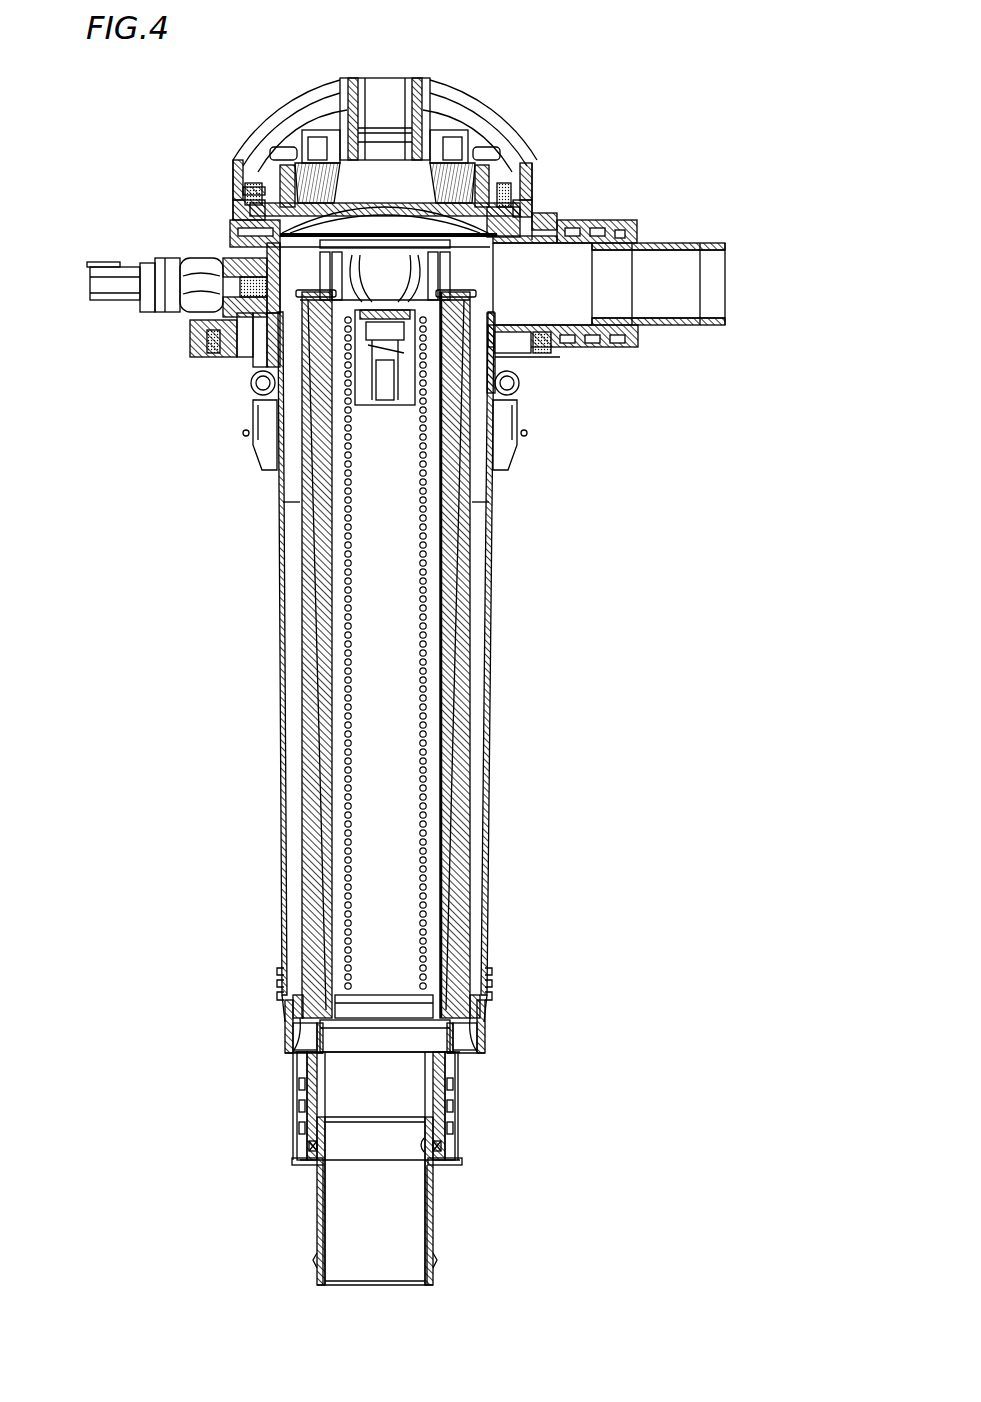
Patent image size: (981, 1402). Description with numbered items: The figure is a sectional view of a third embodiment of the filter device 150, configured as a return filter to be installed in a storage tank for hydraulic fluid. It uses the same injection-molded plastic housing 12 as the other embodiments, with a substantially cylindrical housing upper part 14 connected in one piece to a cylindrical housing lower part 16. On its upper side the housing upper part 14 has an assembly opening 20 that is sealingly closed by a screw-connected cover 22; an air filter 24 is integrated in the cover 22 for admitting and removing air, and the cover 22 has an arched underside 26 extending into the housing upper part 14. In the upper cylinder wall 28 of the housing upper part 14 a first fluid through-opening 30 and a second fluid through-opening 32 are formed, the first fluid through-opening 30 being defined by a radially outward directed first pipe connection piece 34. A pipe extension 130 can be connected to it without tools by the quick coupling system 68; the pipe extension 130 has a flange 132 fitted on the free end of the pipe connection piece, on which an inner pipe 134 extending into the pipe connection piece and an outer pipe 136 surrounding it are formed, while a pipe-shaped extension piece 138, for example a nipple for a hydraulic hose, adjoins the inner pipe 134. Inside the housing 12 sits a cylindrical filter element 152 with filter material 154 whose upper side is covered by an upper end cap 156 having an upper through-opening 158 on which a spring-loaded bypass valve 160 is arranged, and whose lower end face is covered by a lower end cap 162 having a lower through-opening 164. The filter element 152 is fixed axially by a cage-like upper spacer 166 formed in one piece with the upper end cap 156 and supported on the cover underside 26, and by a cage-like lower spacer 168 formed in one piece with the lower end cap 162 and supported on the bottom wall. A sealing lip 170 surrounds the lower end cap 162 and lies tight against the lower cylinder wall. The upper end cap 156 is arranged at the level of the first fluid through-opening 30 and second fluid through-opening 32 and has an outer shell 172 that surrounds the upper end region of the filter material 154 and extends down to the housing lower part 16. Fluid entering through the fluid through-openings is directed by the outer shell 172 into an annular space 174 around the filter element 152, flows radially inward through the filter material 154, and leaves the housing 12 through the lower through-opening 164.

The housing 12 is at (264, 484).
The housing upper part 14 is at (545, 187).
The housing lower part 16 is at (264, 574).
The assembly opening 20 is at (514, 168).
The cover 22 is at (318, 104).
The air filter 24 is at (449, 173).
The arched underside 26 is at (245, 212).
The upper cylinder wall 28 is at (526, 220).
The first fluid through-opening 30 is at (576, 242).
The second fluid through-opening 32 is at (377, 255).
The first pipe connection piece 34 is at (498, 327).
The quick coupling system 68 is at (280, 1114).
The pipe extension 130 is at (662, 341).
The flange 132 is at (309, 1163).
The inner pipe 134 is at (455, 1127).
The outer pipe 136 is at (457, 1145).
The pipe-shaped extension piece 138 is at (703, 328).
The filter device 150 is at (528, 88).
The filter element 152 is at (299, 717).
The filter material 154 is at (312, 662).
The upper end cap 156 is at (240, 293).
The upper through-opening 158 is at (449, 232).
The bypass valve 160 is at (351, 331).
The lower end cap 162 is at (300, 1024).
The lower through-opening 164 is at (315, 1062).
The upper spacer 166 is at (272, 243).
The lower spacer 168 is at (462, 1023).
The sealing lip 170 is at (285, 1018).
The outer shell 172 is at (482, 358).
The annular space 174 is at (481, 531).